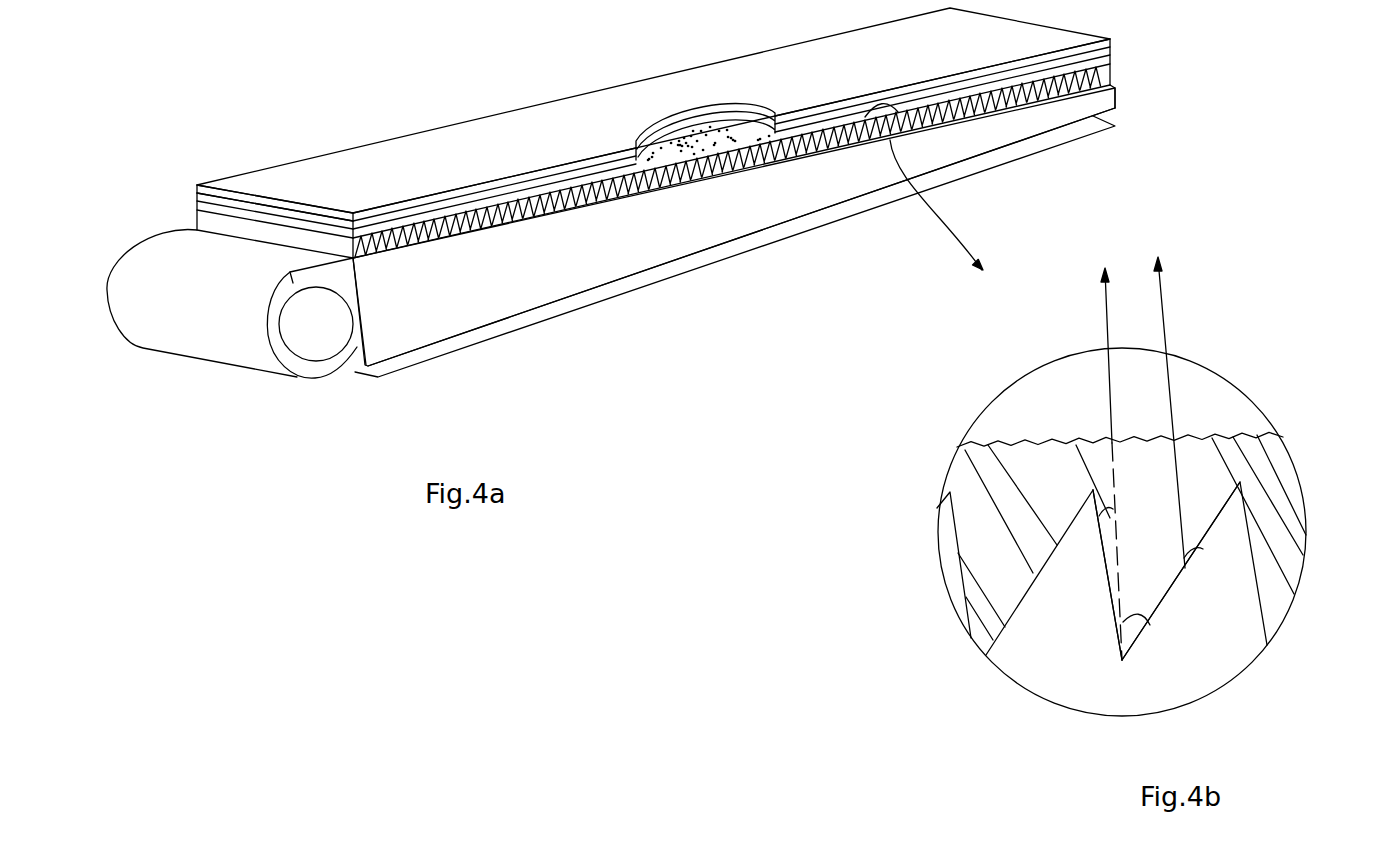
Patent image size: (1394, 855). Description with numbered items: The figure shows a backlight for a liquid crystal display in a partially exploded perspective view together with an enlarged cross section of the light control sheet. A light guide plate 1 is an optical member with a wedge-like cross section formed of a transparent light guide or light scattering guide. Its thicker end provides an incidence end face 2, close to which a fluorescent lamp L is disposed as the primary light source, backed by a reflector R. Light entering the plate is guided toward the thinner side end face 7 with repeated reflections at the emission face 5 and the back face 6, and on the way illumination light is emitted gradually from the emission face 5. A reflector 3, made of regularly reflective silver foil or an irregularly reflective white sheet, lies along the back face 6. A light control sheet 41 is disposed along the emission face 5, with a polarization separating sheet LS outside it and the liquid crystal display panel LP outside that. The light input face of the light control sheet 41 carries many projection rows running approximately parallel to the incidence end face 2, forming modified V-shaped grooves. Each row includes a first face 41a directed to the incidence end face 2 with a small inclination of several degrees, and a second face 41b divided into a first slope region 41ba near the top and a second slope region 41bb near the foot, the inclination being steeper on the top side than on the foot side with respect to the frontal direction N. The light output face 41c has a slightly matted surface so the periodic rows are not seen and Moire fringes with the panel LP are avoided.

In FIG. 4A, the light guide plate 1 is at (485, 296).
In FIG. 4A, the incidence end face 2 is at (359, 355).
In FIG. 4A, the reflector 3 is at (685, 280).
In FIG. 4A, the emission face 5 is at (592, 207).
In FIG. 4A, the back face 6 is at (594, 292).
In FIG. 4A, the thinner side end face 7 is at (1123, 98).
In FIG. 4A, the light control sheet 41 is at (1105, 70).
In FIG. 4B, the first face 41a is at (1103, 589).
In FIG. 4B, the second face 41b is at (1373, 617).
In FIG. 4B, the first slope region 41ba is at (1170, 612).
In FIG. 4B, the second slope region 41bb is at (1222, 534).
In FIG. 4A, the light output face 41c is at (690, 140).
In FIG. 4B, the light output face 41c is at (1197, 434).
In FIG. 4A, the fluorescent lamp L is at (332, 338).
In FIG. 4A, the reflector R is at (194, 340).
In FIG. 4A, the liquid crystal display panel LP is at (197, 187).
In FIG. 4A, the polarization separating sheet LS is at (197, 196).
In FIG. 4B, the frontal direction N is at (1110, 327).